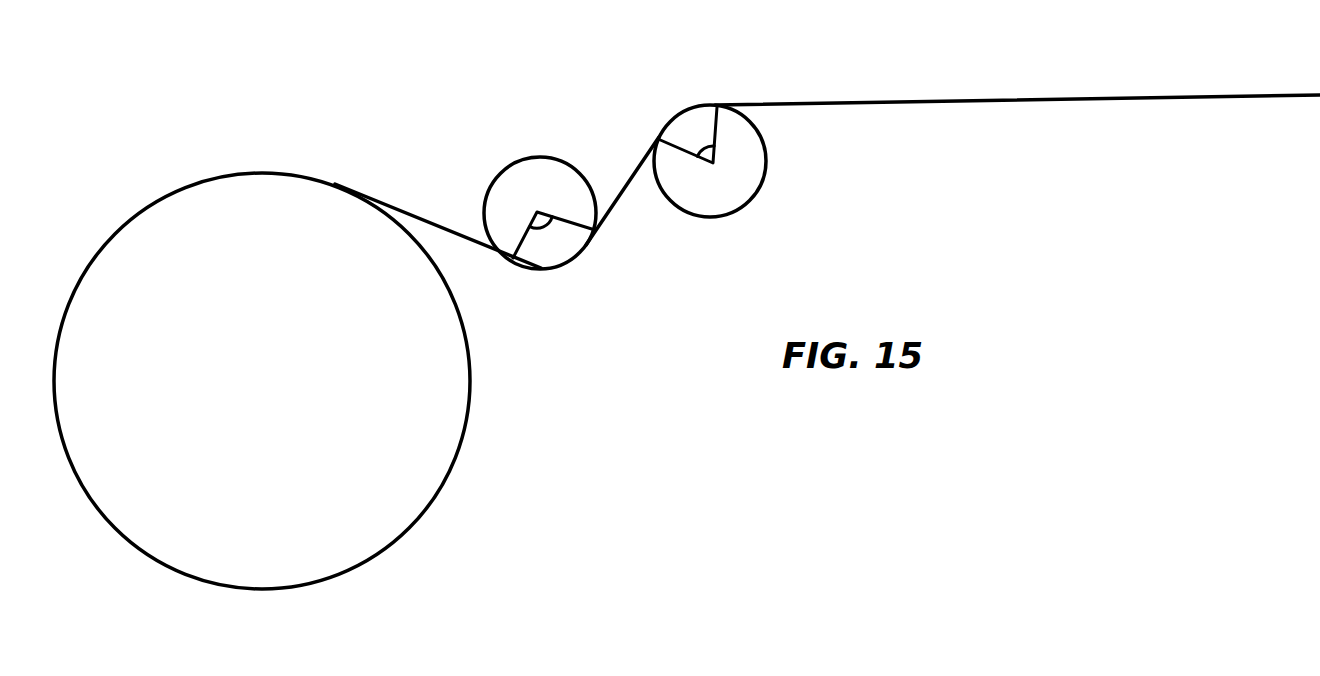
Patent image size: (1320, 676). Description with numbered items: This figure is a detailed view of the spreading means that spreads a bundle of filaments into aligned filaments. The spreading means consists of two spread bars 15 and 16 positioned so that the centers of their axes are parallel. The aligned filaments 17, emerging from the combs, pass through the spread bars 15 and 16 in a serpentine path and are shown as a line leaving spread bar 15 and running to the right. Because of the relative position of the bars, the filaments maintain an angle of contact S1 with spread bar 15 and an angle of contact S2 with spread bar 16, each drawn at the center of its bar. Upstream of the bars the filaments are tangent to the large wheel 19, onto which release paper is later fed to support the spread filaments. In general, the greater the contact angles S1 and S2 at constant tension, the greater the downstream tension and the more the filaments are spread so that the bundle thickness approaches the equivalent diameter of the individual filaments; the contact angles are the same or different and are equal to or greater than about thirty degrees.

The spread bar 15 is at (743, 126).
The spread bar 16 is at (559, 244).
The aligned filaments 17 is at (1043, 98).
The wheel 19 is at (453, 418).
The angle of contact with spread bar 15 S1 is at (684, 97).
The angle of contact with spread bar 16 S2 is at (558, 242).